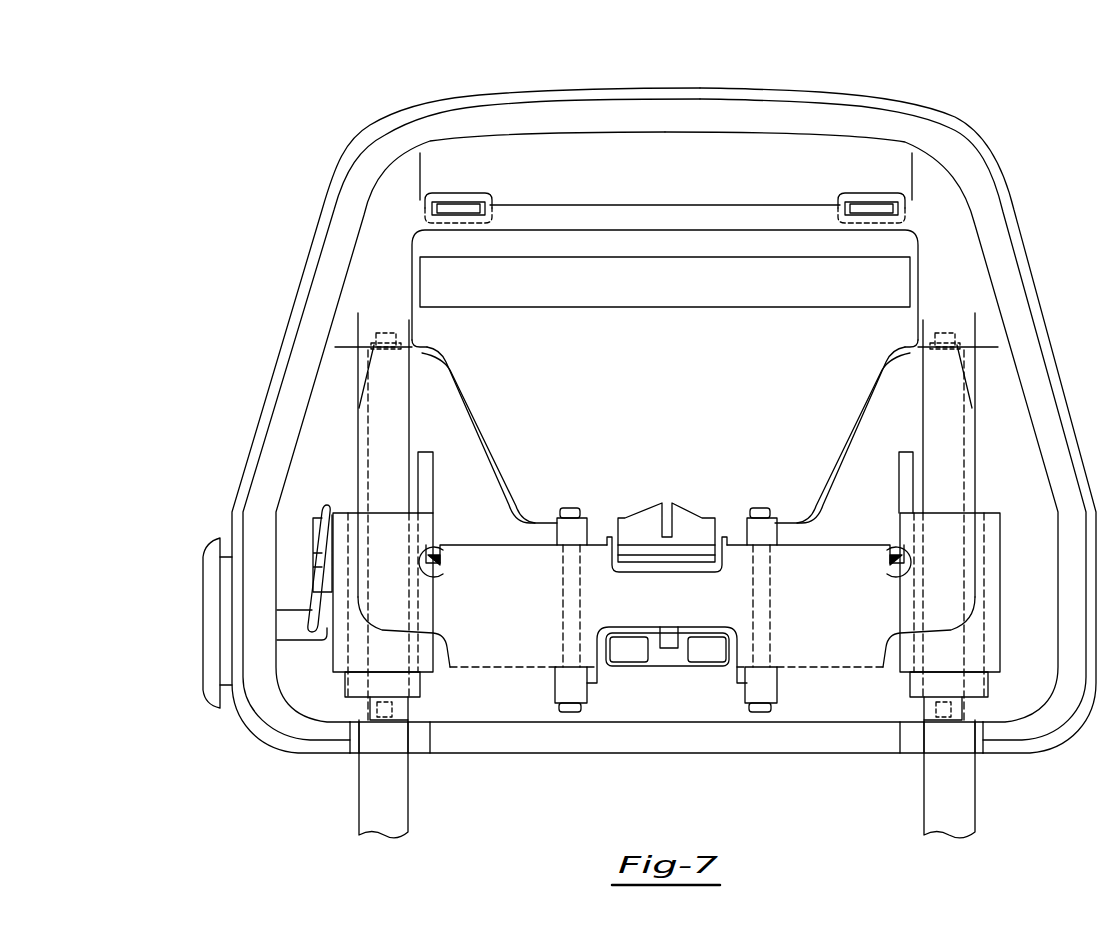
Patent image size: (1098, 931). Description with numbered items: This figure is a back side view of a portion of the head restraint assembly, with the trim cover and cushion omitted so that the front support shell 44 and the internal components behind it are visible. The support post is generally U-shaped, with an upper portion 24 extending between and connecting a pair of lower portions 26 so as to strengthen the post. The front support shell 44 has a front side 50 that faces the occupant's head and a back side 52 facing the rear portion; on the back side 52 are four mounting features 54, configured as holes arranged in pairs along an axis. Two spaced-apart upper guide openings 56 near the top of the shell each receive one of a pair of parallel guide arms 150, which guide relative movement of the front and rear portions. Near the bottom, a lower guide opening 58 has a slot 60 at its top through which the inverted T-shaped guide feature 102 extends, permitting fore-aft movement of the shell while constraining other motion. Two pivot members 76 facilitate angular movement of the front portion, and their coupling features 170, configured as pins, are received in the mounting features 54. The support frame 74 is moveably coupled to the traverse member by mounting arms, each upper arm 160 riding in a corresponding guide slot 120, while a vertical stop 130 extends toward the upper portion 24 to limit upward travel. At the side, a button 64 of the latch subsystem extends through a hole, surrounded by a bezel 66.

The upper portion 24 is at (665, 294).
The lower portions 26 is at (927, 778).
The front support shell 44 is at (333, 152).
The front side 50 is at (762, 150).
The back side 52 is at (680, 157).
The mounting features 54 is at (376, 372).
The upper guide opening 56 is at (450, 207).
The lower guide opening 58 is at (648, 650).
The slot 60 is at (663, 627).
The button 64 is at (296, 634).
The bezel 66 is at (208, 643).
The support frame 74 is at (930, 220).
The pivot member 76 is at (480, 514).
The guide feature 102 is at (680, 655).
The guide slot 120 is at (440, 563).
The vertical stop 130 is at (430, 477).
The guide arms 150 is at (463, 207).
The upper arm 160 is at (418, 585).
The coupling features 170 is at (392, 363).